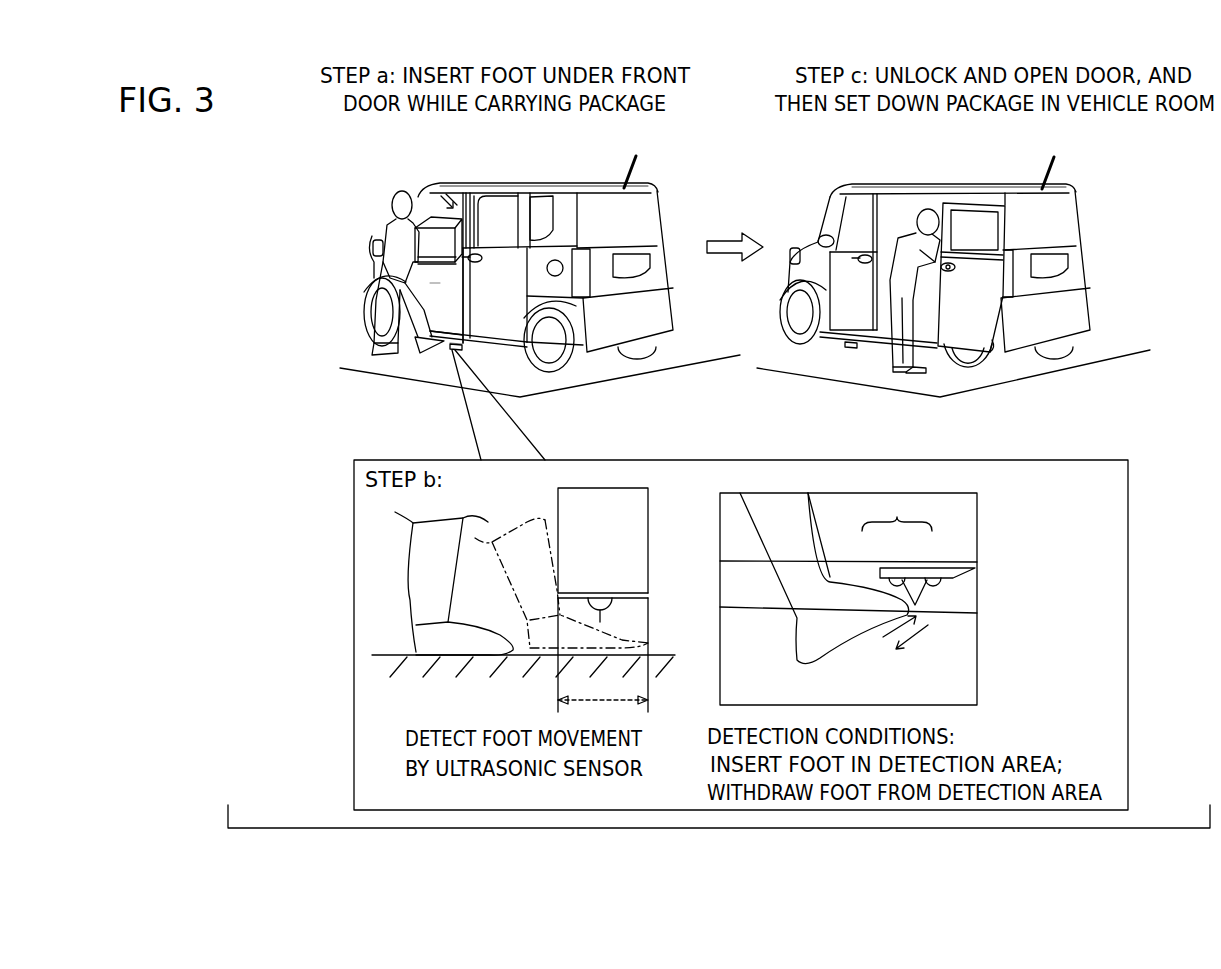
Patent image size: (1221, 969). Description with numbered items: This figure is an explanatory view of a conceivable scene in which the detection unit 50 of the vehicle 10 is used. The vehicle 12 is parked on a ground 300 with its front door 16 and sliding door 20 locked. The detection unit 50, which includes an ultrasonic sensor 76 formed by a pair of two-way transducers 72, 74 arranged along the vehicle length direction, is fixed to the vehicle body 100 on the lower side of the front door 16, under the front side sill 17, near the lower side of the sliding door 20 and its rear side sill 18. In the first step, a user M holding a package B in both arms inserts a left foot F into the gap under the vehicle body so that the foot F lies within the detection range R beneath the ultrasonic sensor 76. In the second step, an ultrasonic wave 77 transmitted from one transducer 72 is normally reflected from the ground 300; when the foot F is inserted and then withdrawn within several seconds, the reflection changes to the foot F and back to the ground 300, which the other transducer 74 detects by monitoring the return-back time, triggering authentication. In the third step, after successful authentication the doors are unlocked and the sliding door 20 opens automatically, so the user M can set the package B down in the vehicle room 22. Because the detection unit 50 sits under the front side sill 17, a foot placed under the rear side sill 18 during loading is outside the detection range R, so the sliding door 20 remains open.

The vehicle 10 is at (425, 360).
The vehicle 12 is at (566, 184).
The vehicle body 100 is at (471, 182).
The sliding door 20 is at (496, 203).
The vehicle room 22 is at (430, 185).
The front door 16 is at (435, 283).
The front side sill 17 is at (437, 333).
The rear side sill 18 is at (487, 336).
The detection unit 50 is at (460, 341).
The transducer 72 is at (895, 575).
The transducer 74 is at (600, 598).
The ultrasonic sensor 76 is at (897, 513).
The ultrasonic wave 77 is at (612, 621).
The ground 300 is at (603, 365).
The user M is at (391, 205).
The package B is at (455, 238).
The left foot F is at (390, 332).
The detection range R is at (603, 655).